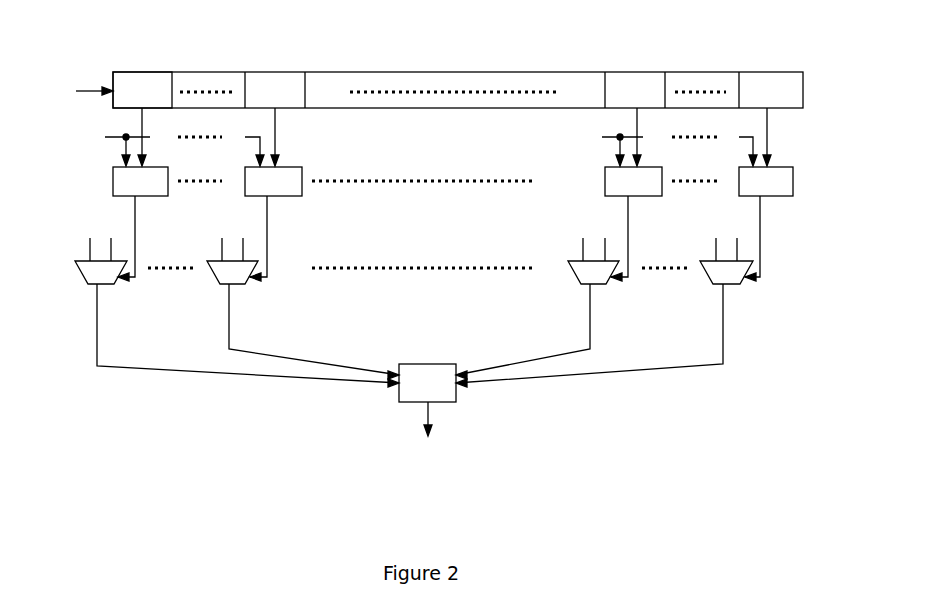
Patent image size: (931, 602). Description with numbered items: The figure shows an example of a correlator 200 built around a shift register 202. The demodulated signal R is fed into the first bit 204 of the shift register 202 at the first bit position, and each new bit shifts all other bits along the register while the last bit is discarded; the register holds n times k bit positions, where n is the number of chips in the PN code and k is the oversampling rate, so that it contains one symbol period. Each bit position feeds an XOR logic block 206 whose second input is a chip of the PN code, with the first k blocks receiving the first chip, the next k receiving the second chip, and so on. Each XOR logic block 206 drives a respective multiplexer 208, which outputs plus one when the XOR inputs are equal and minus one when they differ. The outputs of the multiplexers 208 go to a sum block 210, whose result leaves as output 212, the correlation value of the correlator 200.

The correlator 200 is at (440, 534).
The shift register 202 is at (375, 71).
The first bit 204 is at (122, 80).
The XOR logic block 206 is at (113, 180).
The multiplexer 208 is at (80, 275).
The sum block 210 is at (415, 364).
The output 212 is at (434, 421).